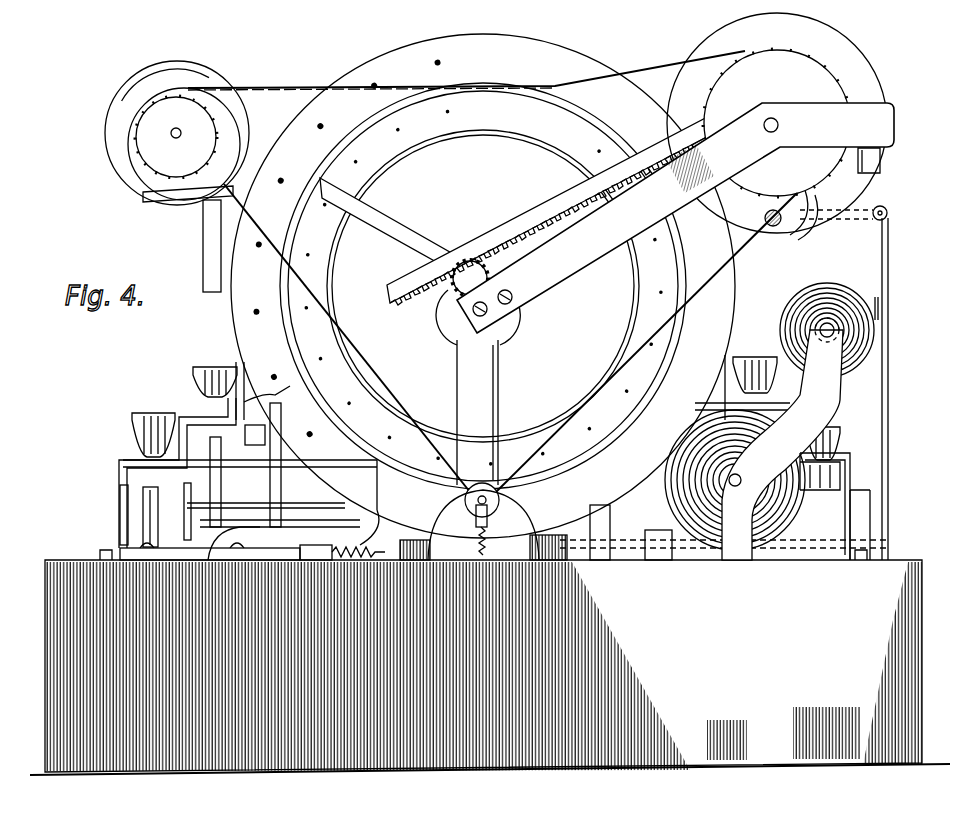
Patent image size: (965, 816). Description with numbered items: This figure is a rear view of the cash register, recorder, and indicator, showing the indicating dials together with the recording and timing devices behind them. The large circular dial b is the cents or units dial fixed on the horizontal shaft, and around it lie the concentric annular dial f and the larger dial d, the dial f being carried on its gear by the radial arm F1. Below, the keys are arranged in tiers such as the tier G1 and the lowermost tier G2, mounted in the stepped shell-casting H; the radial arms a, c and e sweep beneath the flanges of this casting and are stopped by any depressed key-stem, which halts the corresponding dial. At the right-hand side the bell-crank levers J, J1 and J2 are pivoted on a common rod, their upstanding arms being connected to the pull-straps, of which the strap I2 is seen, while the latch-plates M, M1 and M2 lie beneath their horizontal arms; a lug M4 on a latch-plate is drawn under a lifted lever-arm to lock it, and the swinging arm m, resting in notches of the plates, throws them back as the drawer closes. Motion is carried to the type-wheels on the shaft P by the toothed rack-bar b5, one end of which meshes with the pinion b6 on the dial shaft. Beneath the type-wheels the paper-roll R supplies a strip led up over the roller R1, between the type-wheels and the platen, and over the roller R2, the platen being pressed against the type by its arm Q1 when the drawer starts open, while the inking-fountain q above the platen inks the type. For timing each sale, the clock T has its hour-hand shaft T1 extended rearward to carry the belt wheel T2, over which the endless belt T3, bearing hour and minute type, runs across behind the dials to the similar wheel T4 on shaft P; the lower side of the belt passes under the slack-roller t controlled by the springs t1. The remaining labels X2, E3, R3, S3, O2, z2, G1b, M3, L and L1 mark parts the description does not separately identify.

The latch-plate M is at (490, 667).
The dial d is at (483, 286).
The annular dial f is at (457, 260).
The key tier G1 is at (204, 382).
The key tier G2 is at (486, 436).
The shell-casting H is at (482, 461).
The radial arm c is at (251, 502).
The bell-crank lever J is at (283, 490).
The bell-crank lever J1 is at (227, 482).
The bell-crank lever J2 is at (158, 525).
The block L is at (255, 435).
The rod L' L1 is at (195, 510).
The radial arm e is at (118, 523).
The latch-plate M1 is at (210, 544).
The latch-plate M2 is at (280, 569).
The spring M3 is at (358, 570).
The lug M4 is at (242, 543).
The swinging arm m is at (483, 553).
The radial arm a is at (267, 394).
The clock T is at (167, 175).
The sprocket or belt wheel T2 is at (176, 137).
The hour-hand shaft T1 is at (184, 144).
The endless belt T3 is at (494, 271).
The radial arm F1 is at (387, 223).
The toothed rack-bar b5 is at (548, 205).
The pinion b6 is at (490, 270).
The arm X2 is at (478, 387).
The circular dial b is at (512, 336).
The slack-roller t is at (482, 490).
The springs t1 is at (483, 525).
The bracket E3 is at (572, 552).
The paper-roll R is at (785, 518).
The cup G1 G1b is at (744, 387).
The spring R3 and arm R3 is at (835, 282).
The pull-strap I2 is at (838, 480).
The frame O2 is at (889, 450).
The link 2'' z2 is at (880, 312).
The platen arm Q1 is at (886, 208).
The inking-fountain q is at (882, 162).
The roller R2 is at (814, 213).
The roller R1 is at (766, 215).
The wheel S3 is at (777, 123).
The belt wheel T4 is at (777, 123).
The shaft P is at (779, 125).